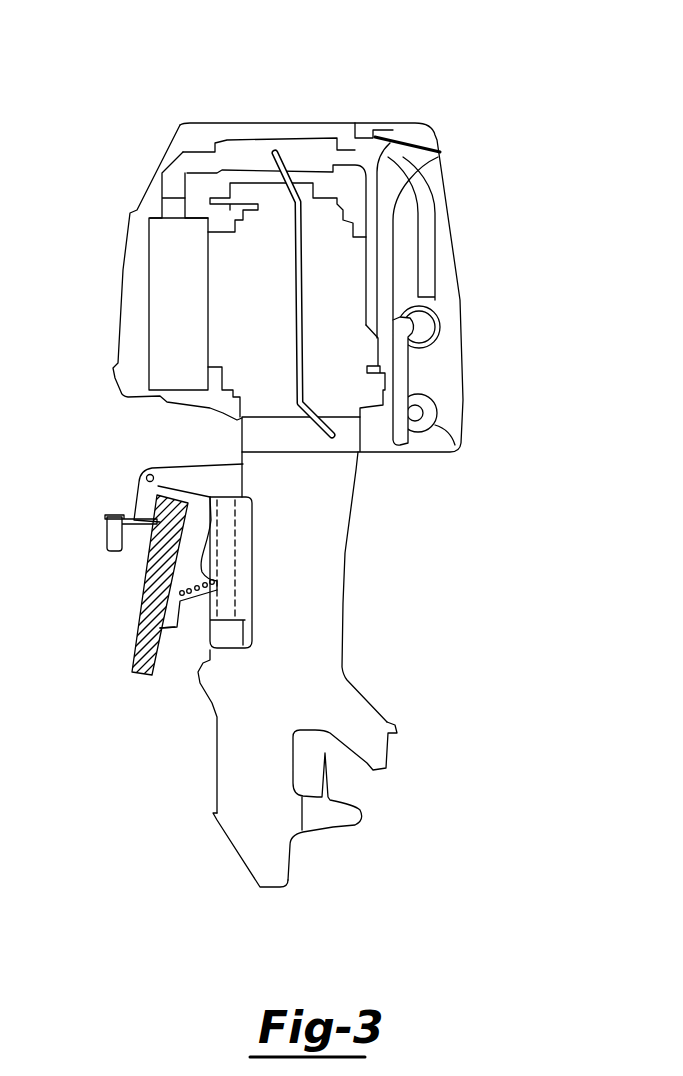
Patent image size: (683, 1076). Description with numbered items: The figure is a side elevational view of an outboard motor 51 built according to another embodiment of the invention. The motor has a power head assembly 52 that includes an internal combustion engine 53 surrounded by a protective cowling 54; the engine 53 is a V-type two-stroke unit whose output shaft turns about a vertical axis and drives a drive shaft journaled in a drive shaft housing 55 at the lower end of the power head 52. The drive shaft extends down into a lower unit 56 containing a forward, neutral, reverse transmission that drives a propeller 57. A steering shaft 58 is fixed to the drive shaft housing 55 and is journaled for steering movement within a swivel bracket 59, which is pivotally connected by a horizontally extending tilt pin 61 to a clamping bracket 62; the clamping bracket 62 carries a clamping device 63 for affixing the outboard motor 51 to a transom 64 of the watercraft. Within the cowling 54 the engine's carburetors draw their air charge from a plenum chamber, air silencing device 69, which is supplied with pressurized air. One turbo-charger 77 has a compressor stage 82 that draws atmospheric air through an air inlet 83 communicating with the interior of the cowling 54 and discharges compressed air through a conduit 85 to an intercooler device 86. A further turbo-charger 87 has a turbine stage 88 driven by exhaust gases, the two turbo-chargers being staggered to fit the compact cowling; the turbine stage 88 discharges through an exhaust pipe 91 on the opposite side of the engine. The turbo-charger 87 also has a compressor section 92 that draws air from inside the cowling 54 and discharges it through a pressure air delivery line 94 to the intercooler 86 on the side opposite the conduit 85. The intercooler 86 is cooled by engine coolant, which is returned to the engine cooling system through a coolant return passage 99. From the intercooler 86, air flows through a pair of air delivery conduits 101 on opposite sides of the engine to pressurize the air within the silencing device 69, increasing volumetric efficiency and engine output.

The outboard motor 51 is at (368, 492).
The power head assembly 52 is at (137, 243).
The internal combustion engine 53 is at (243, 329).
The protective cowling 54 is at (118, 313).
The drive shaft housing 55 is at (327, 557).
The lower unit 56 is at (237, 805).
The propeller 57 is at (330, 773).
The steering shaft 58 is at (207, 613).
The swivel bracket 59 is at (228, 540).
The tilt pin 61 is at (146, 480).
The clamping bracket 62 is at (180, 577).
The clamping device 63 is at (112, 522).
The transom 64 is at (152, 643).
The plenum chamber, air silencing device 69 is at (157, 283).
The turbo-charger 77 is at (449, 394).
The compressor stage 82 is at (415, 425).
The air inlet 83 is at (413, 413).
The conduit 85 is at (388, 222).
The intercooler device 86 is at (316, 152).
The turbo-charger 87 is at (450, 308).
The turbine stage 88 is at (440, 330).
The exhaust pipe 91 is at (405, 368).
The compressor section 92 is at (440, 342).
The pressure air delivery line 94 is at (432, 240).
The coolant return passage 99 is at (302, 292).
The air delivery conduits 101 is at (176, 166).